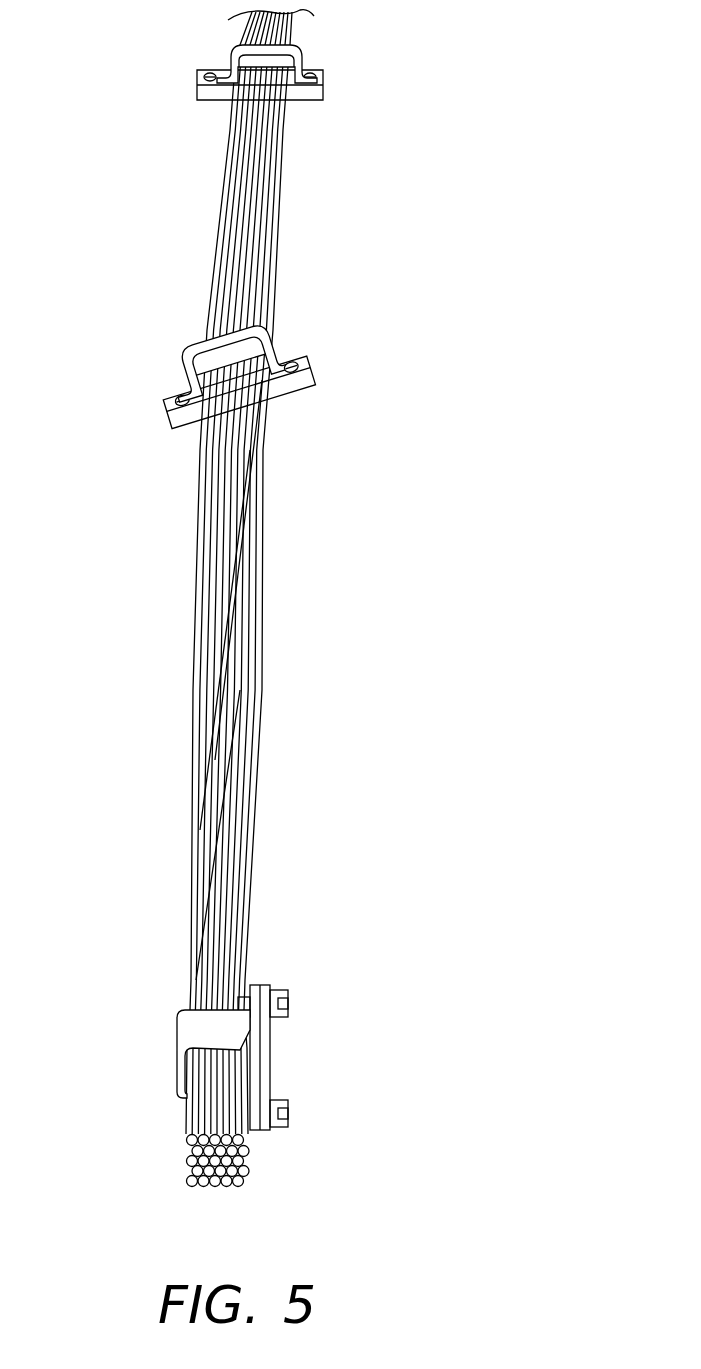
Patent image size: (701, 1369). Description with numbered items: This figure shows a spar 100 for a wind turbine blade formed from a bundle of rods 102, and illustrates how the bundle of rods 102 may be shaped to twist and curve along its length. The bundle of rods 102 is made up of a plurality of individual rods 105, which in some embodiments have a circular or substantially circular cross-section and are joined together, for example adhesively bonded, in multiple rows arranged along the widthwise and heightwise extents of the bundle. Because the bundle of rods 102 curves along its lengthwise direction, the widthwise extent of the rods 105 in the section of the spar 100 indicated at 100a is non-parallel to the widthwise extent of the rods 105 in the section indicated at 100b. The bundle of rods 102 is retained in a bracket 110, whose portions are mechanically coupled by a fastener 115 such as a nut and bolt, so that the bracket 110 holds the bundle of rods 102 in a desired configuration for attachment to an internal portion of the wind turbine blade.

The spar 100 is at (214, 572).
The section of the spar 100a is at (275, 1053).
The section of the spar 100b is at (295, 122).
The bundle of rods 102 is at (257, 1185).
The rods 105 is at (248, 930).
The bracket 110 is at (198, 348).
The fastener 115 is at (298, 348).